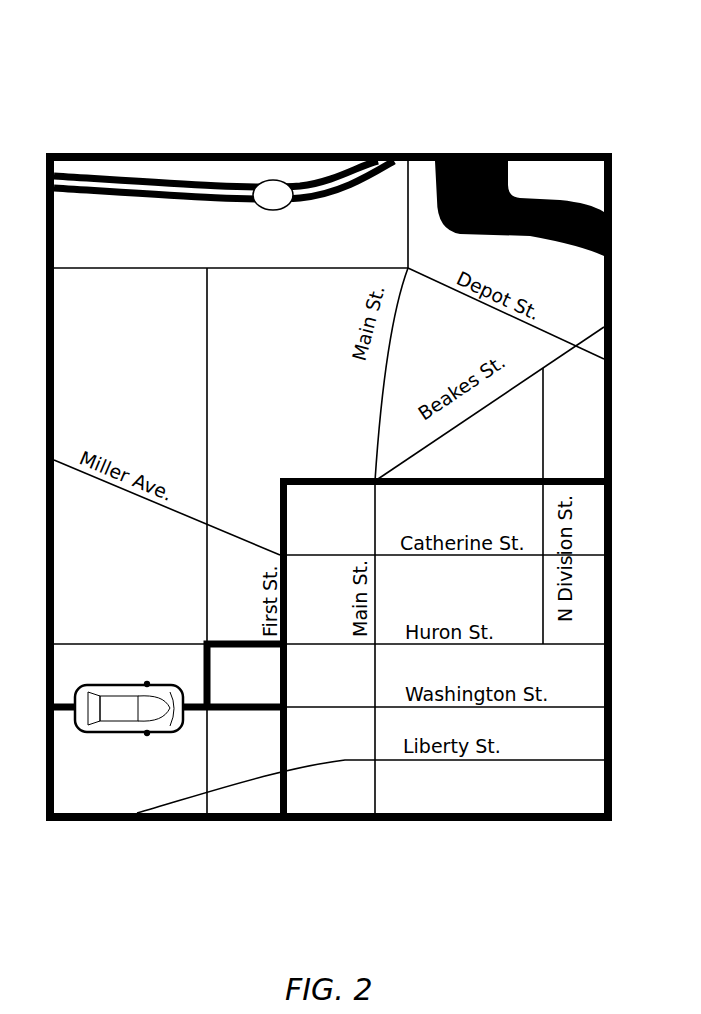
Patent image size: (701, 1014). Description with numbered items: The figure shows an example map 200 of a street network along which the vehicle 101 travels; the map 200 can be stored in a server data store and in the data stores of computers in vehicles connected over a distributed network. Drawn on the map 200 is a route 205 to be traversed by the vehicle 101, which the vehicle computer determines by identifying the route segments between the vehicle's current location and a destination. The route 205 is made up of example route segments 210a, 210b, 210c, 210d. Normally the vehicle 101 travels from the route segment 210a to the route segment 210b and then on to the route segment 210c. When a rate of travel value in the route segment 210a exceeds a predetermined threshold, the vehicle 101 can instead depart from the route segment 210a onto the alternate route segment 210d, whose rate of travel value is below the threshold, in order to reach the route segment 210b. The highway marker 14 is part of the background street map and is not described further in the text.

The map 200 is at (88, 70).
The vehicle 101 is at (113, 733).
The route 205 is at (287, 682).
The route segment 210a is at (252, 708).
The route segment 210b is at (280, 513).
The route segment 210c is at (338, 478).
The route segment 210d is at (228, 643).
The highway marker 14 is at (224, 185).